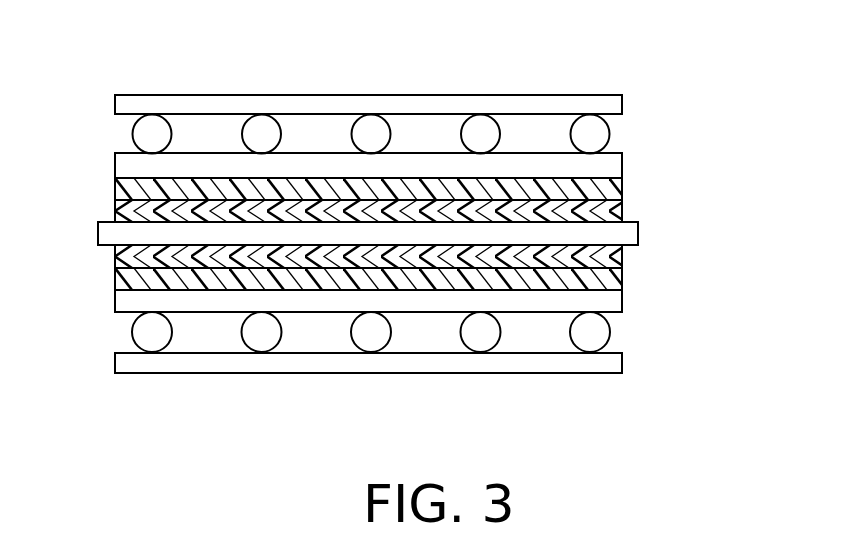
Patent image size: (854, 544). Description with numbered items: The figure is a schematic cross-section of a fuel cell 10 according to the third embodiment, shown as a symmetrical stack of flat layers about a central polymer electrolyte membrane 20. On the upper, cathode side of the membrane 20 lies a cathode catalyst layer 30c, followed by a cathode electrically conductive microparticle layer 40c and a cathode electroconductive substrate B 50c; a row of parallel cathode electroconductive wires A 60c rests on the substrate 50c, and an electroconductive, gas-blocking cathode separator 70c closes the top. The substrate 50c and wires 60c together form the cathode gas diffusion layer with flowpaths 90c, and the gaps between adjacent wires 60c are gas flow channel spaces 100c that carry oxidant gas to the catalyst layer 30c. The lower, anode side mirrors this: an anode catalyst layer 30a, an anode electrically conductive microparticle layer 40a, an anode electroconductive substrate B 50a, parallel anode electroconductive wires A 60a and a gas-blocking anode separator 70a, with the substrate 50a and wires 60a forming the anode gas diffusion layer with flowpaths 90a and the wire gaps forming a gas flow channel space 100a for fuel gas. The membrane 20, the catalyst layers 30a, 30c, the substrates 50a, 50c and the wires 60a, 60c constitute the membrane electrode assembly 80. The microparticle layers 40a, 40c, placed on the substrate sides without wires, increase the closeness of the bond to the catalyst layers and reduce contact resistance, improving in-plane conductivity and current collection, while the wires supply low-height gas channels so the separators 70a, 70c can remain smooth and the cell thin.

The fuel cell 10 is at (123, 41).
The polymer electrolyte membrane 20 is at (638, 235).
The anode catalyst layer 30a is at (622, 262).
The cathode catalyst layer 30c is at (622, 207).
The anode electrically conductive microparticle layer 40a is at (115, 282).
The cathode electrically conductive microparticle layer 40c is at (115, 190).
The anode electroconductive substrate B 50a is at (623, 302).
The cathode electroconductive substrate B 50c is at (623, 165).
The anode electroconductive wires A 60a is at (600, 332).
The cathode electroconductive wires A 60c is at (600, 130).
The anode separator 70a is at (597, 373).
The cathode separator 70c is at (598, 95).
The membrane electrode assembly 80 is at (795, 130).
The anode gas diffusion layer with flowpaths 90a is at (728, 290).
The cathode gas diffusion layer with flowpaths 90c is at (728, 113).
The gas flow channel space 100a is at (302, 340).
The gas flow channel spaces 100c is at (322, 120).